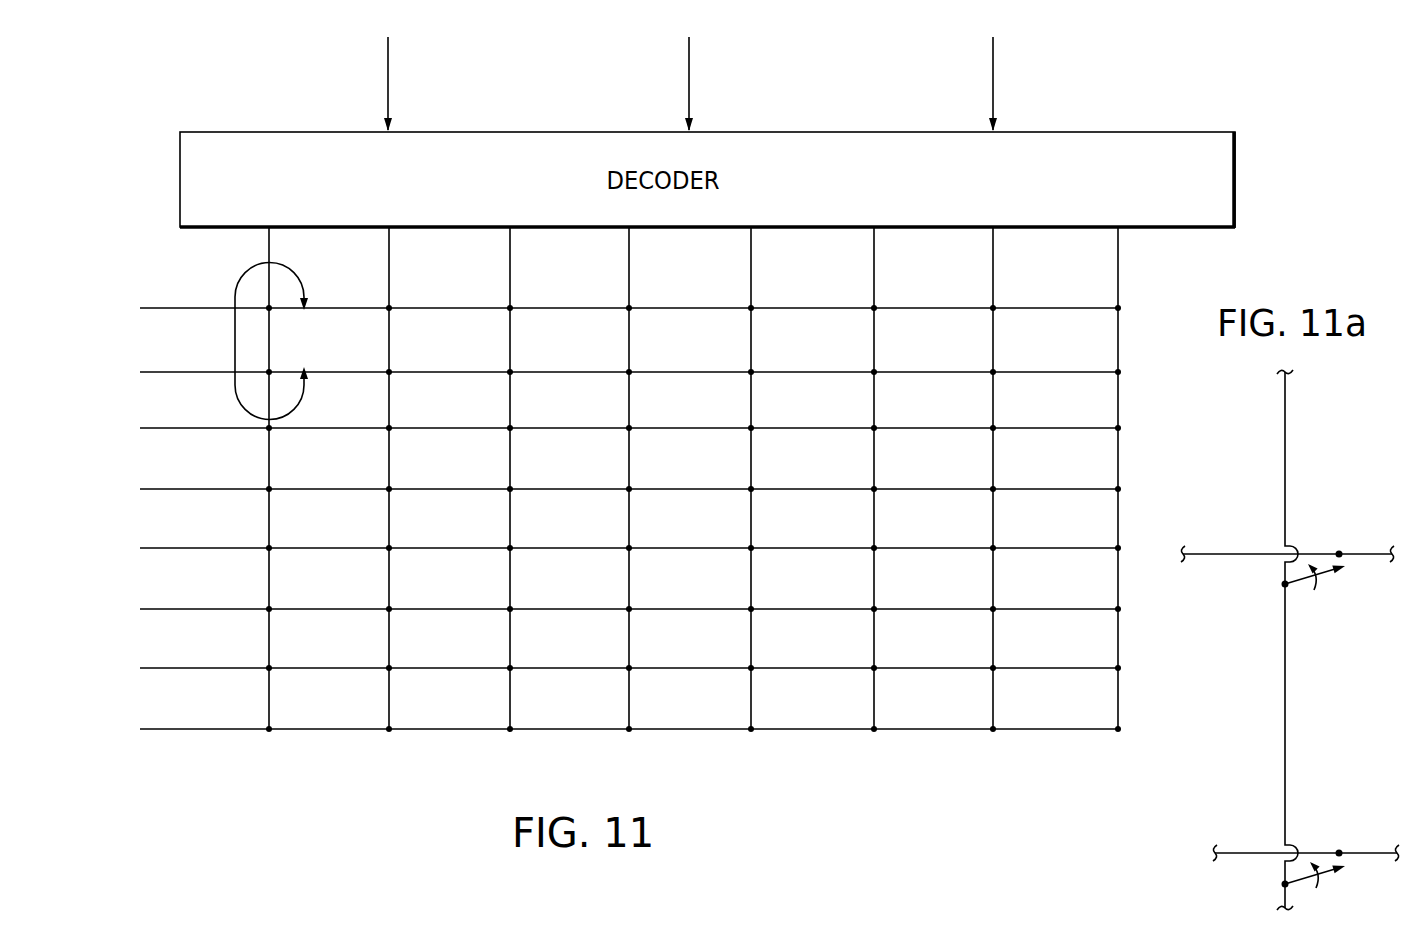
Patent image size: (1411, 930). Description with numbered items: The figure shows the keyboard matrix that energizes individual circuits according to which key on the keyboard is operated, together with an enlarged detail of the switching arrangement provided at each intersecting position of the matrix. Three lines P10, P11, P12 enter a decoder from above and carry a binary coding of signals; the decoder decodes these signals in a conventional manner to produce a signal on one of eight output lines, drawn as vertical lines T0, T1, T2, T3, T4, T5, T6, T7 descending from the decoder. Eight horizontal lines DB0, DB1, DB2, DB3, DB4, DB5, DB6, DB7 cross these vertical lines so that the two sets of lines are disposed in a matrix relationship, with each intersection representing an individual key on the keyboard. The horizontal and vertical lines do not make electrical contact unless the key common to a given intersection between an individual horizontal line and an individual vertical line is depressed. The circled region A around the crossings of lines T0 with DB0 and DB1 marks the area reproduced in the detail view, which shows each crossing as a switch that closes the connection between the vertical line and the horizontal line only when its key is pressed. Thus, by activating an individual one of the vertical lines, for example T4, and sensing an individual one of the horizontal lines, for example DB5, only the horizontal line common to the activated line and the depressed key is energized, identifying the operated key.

In FIG. 11, the line P10 is at (392, 72).
In FIG. 11, the line P11 is at (692, 72).
In FIG. 11, the line P12 is at (993, 72).
In FIG. 11, the line T0 is at (284, 479).
In FIG. 11A, the line T0 is at (1302, 640).
In FIG. 11, the line T1 is at (405, 479).
In FIG. 11, the line T2 is at (525, 479).
In FIG. 11, the line T3 is at (644, 479).
In FIG. 11, the line T4 is at (766, 479).
In FIG. 11, the line T5 is at (889, 479).
In FIG. 11, the line T6 is at (1008, 479).
In FIG. 11, the line T7 is at (1133, 479).
In FIG. 11, the line DB0 is at (582, 308).
In FIG. 11A, the line DB0 is at (1287, 558).
In FIG. 11, the line DB1 is at (582, 372).
In FIG. 11A, the line DB1 is at (1295, 855).
In FIG. 11, the line DB2 is at (582, 428).
In FIG. 11, the line DB3 is at (582, 489).
In FIG. 11, the line DB4 is at (582, 548).
In FIG. 11, the line DB5 is at (582, 609).
In FIG. 11, the line DB6 is at (582, 668).
In FIG. 11, the line DB7 is at (582, 729).
In FIG. 11, the detail region A shown in FIG. 11A A is at (273, 341).